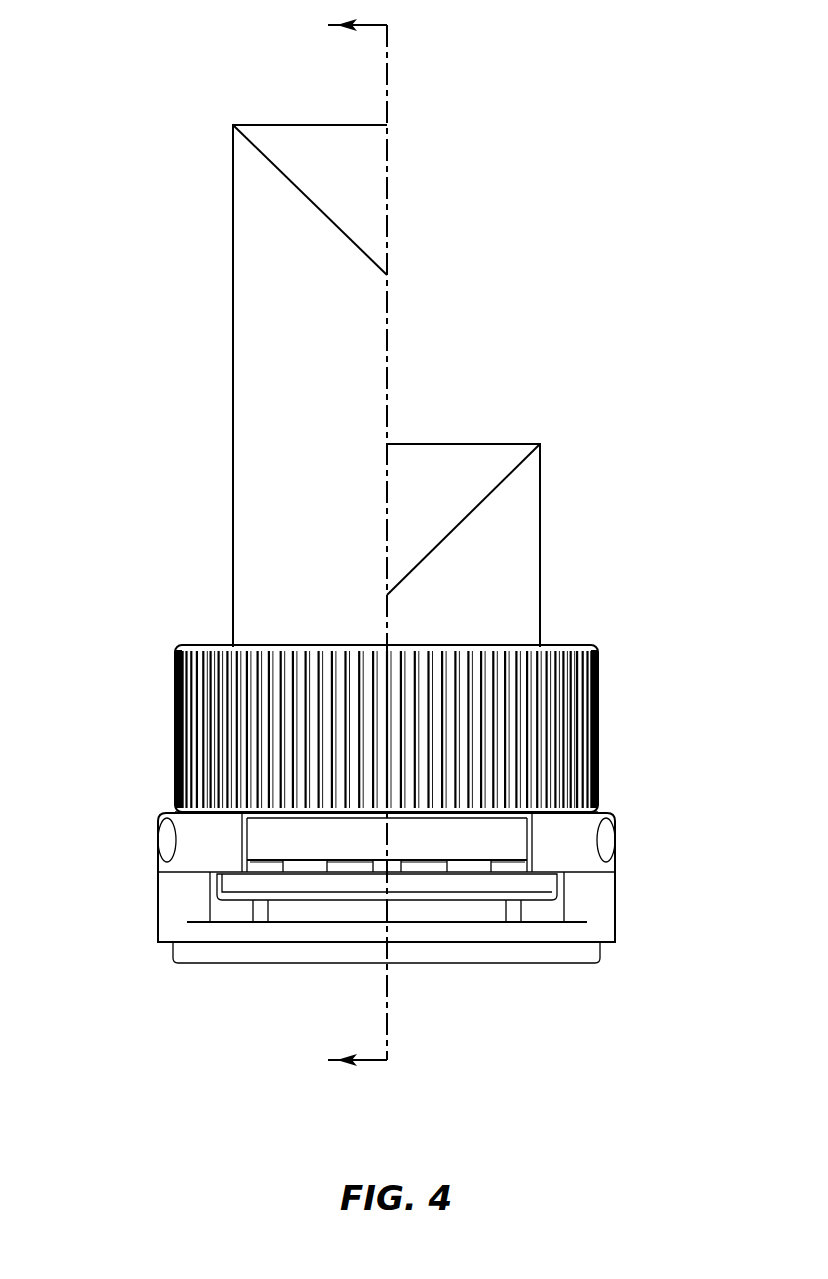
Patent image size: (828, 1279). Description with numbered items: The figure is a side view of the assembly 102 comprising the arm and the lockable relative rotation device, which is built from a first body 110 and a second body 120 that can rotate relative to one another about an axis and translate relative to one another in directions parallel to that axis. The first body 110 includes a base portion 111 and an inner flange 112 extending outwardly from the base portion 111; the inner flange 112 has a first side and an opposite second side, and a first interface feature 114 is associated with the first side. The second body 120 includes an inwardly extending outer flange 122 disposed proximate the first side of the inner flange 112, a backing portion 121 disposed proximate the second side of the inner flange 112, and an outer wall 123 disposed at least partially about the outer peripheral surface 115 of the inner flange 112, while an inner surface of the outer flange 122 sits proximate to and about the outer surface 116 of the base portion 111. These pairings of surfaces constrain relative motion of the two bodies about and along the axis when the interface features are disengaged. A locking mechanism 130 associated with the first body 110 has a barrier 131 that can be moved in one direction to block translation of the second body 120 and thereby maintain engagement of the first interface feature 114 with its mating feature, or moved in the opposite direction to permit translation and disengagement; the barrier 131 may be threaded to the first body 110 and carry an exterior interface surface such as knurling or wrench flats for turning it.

The wearable device assembly 102 is at (217, 54).
The first body 110 is at (183, 362).
The base portion 111 is at (470, 812).
The inner flange 112 is at (226, 906).
The first interface feature 114 is at (302, 868).
The outer peripheral surface 115 is at (432, 884).
The outer surface 116 is at (490, 830).
The second body 120 is at (108, 843).
The backing portion 121 is at (549, 976).
The outer flange 122 is at (631, 846).
The outer wall 123 is at (632, 917).
The locking mechanism 130 is at (160, 612).
The barrier 131 is at (174, 722).